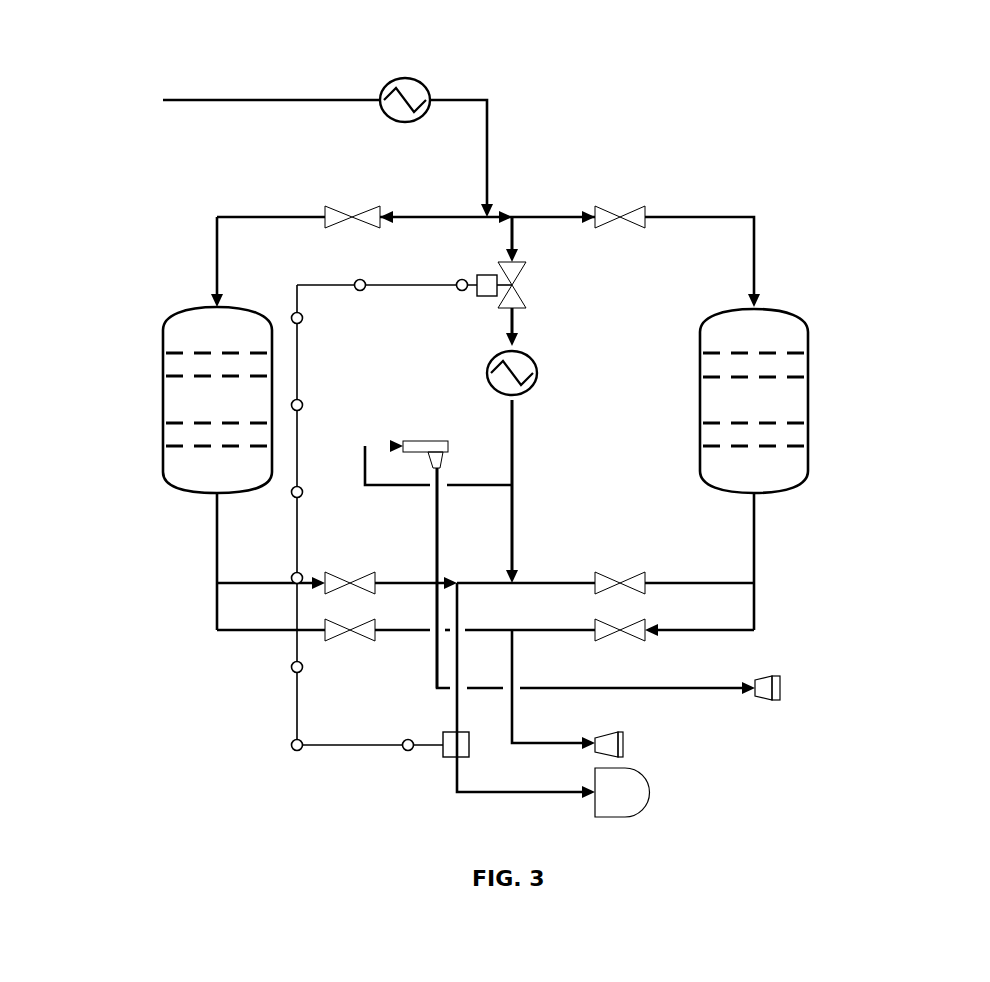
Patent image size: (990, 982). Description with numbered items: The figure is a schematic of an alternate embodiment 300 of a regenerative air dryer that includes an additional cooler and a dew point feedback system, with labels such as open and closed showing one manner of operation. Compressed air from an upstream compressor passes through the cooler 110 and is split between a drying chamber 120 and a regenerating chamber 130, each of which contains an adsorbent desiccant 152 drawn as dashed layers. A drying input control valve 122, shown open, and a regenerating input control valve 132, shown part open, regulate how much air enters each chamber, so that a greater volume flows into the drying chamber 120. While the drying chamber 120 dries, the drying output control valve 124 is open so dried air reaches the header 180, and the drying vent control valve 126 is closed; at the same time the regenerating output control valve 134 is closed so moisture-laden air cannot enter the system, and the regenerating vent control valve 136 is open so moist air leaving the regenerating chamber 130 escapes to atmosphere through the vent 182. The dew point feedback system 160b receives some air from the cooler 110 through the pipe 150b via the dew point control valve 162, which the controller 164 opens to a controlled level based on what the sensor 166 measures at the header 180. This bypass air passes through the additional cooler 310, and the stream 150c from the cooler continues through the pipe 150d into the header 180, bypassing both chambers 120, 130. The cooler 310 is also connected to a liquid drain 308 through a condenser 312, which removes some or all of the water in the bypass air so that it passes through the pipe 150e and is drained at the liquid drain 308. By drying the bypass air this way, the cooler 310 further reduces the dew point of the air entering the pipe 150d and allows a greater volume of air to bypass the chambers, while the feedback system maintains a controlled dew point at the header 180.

The regenerative air dryer 300 is at (772, 96).
The cooler 110 is at (417, 90).
The drying input control valve 122 is at (325, 210).
The regenerating input control valve 132 is at (645, 210).
The pipe 150b is at (510, 243).
The dew point control valve 162 is at (518, 290).
The controller 164 is at (487, 296).
The dew point feedback system 160b is at (600, 319).
The cooler 310 is at (495, 374).
The pipe 150c is at (515, 330).
The drying chamber 120 is at (163, 484).
The regenerating chamber 130 is at (800, 309).
The adsorbent desiccant 152 is at (197, 448).
The condenser 312 is at (418, 443).
The pipe 150e is at (436, 506).
The pipe 150d is at (515, 537).
The drying output control valve 124 is at (375, 583).
The drying vent control valve 126 is at (378, 633).
The regenerating output control valve 134 is at (645, 577).
The regenerating vent control valve 136 is at (648, 638).
The sensor 166 is at (447, 755).
The liquid drain 308 is at (780, 688).
The vent 182 is at (610, 745).
The header 180 is at (625, 790).